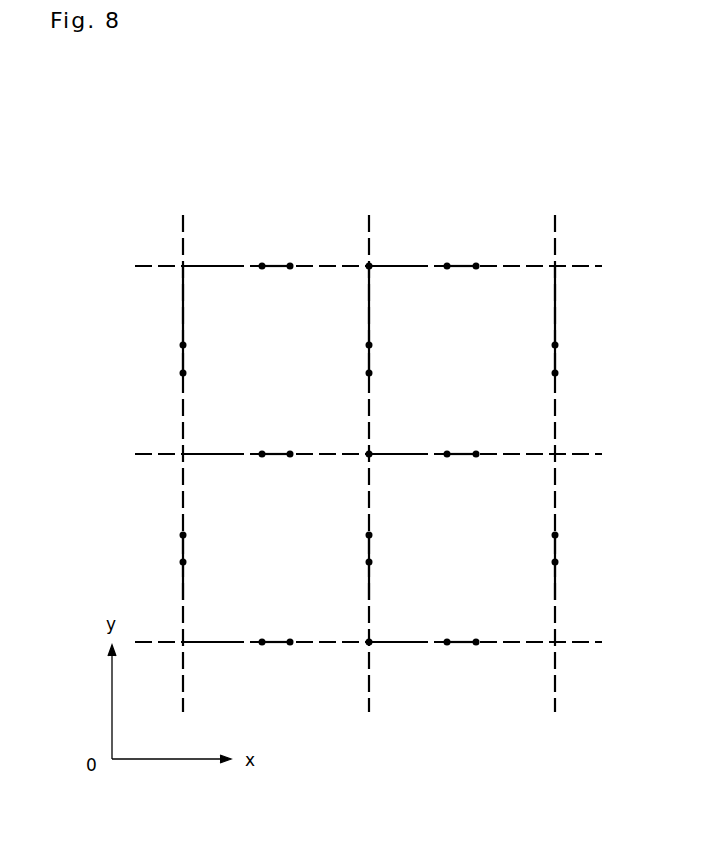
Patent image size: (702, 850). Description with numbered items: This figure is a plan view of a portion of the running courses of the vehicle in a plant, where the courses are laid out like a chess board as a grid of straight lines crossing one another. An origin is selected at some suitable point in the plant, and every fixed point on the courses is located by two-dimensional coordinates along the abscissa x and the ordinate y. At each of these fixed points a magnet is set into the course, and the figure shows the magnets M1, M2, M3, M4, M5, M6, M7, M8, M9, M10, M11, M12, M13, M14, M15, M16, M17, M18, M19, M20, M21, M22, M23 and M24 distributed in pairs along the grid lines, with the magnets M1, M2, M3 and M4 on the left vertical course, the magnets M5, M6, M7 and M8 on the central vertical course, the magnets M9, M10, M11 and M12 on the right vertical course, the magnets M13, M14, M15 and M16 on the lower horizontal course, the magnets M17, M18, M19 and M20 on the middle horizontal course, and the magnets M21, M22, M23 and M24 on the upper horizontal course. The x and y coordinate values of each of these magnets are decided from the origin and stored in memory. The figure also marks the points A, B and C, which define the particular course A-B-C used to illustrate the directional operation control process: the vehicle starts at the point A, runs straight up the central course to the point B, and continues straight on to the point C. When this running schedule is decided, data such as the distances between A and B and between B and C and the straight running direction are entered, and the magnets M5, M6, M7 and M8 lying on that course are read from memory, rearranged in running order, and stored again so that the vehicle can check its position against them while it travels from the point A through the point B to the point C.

The magnet M1 is at (183, 562).
The magnet M2 is at (183, 535).
The magnet M3 is at (183, 373).
The magnet M4 is at (183, 345).
The magnet M5 is at (369, 345).
The magnet M6 is at (369, 373).
The magnet M7 is at (369, 535).
The magnet M8 is at (369, 562).
The magnet M9 is at (555, 562).
The magnet M10 is at (555, 535).
The magnet M11 is at (555, 373).
The magnet M12 is at (555, 345).
The magnet M13 is at (262, 644).
The magnet M14 is at (290, 644).
The magnet M15 is at (447, 644).
The magnet M16 is at (476, 644).
The magnet M17 is at (476, 456).
The magnet M18 is at (447, 456).
The magnet M19 is at (290, 455).
The magnet M20 is at (262, 455).
The magnet M21 is at (262, 267).
The magnet M22 is at (290, 268).
The magnet M23 is at (447, 268).
The magnet M24 is at (476, 268).
The course point A is at (370, 640).
The course point B is at (370, 452).
The course point C is at (371, 264).